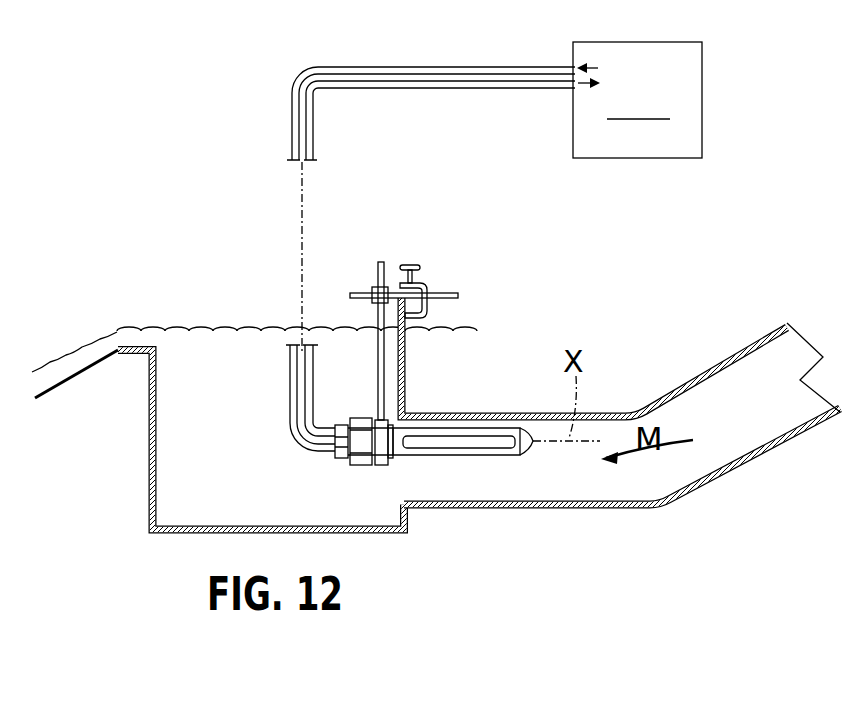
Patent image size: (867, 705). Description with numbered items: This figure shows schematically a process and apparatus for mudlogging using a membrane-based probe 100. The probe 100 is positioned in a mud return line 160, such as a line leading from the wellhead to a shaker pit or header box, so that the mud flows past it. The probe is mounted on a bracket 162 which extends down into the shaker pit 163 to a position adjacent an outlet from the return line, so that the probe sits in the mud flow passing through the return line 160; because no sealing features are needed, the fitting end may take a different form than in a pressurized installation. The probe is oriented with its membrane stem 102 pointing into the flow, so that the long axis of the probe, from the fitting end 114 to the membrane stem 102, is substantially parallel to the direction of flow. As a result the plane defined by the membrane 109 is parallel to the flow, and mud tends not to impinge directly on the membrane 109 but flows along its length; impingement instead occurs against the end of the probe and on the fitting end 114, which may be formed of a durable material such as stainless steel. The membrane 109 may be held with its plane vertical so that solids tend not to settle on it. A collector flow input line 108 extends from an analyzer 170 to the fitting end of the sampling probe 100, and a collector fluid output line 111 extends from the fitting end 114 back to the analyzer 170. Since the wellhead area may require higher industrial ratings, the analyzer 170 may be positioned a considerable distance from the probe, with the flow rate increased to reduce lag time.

The membrane-based probe 100 is at (430, 430).
The membrane stem 102 is at (530, 452).
The collector flow input line 108 is at (460, 67).
The membrane 109 is at (485, 452).
The collector fluid output line 111 is at (415, 89).
The fitting end 114 is at (390, 458).
The mud return line 160 is at (611, 413).
The bracket 162 is at (383, 262).
The shaker pit 163 is at (148, 449).
The analyzer 170 is at (637, 100).